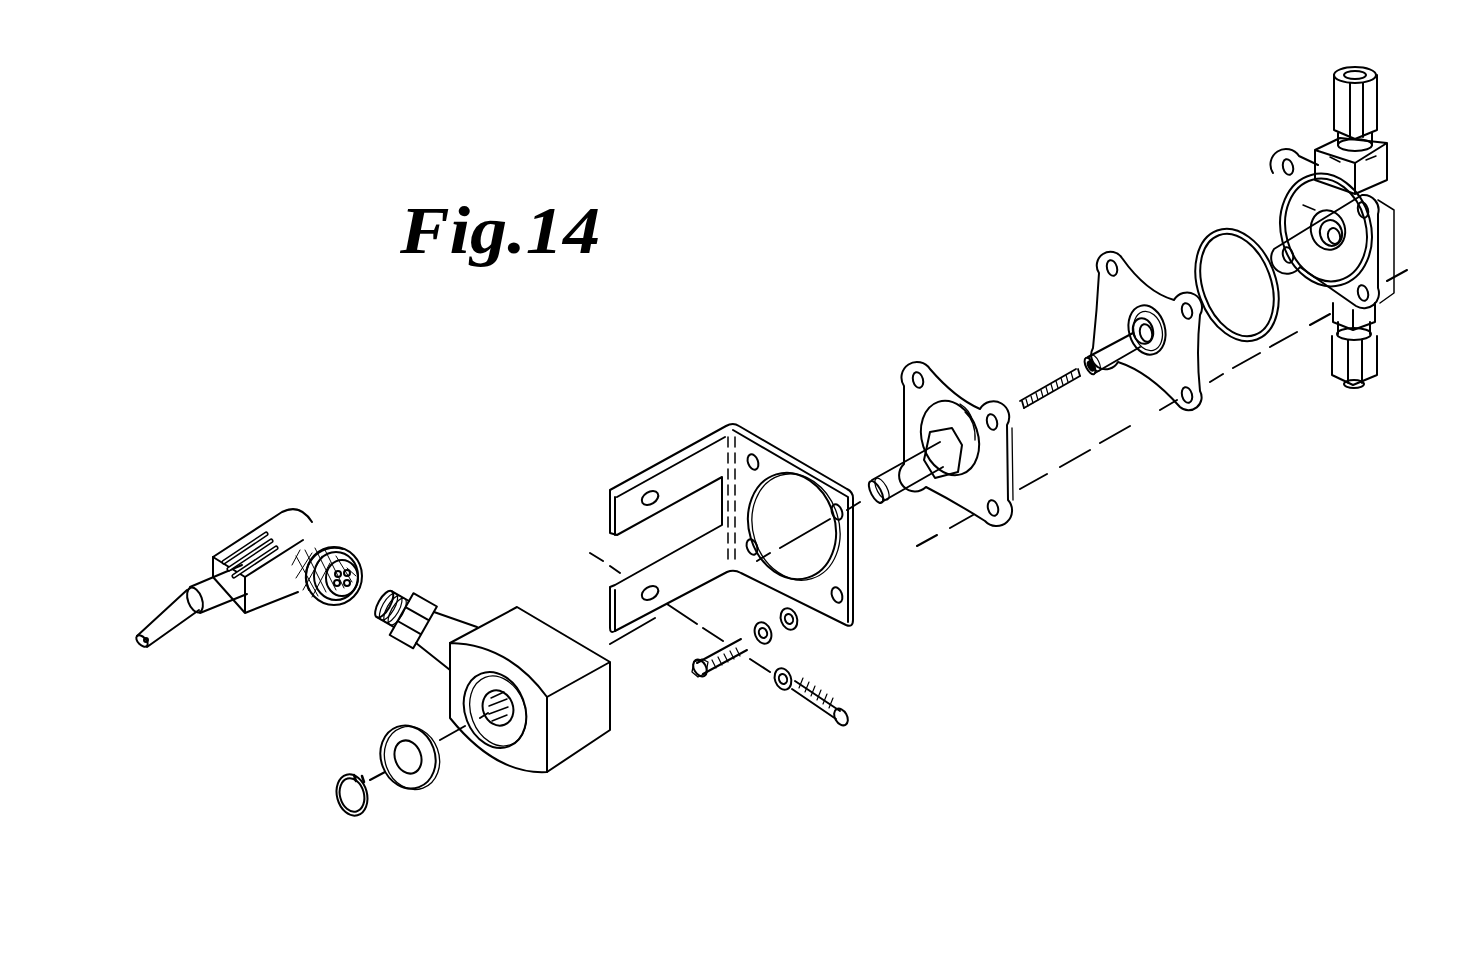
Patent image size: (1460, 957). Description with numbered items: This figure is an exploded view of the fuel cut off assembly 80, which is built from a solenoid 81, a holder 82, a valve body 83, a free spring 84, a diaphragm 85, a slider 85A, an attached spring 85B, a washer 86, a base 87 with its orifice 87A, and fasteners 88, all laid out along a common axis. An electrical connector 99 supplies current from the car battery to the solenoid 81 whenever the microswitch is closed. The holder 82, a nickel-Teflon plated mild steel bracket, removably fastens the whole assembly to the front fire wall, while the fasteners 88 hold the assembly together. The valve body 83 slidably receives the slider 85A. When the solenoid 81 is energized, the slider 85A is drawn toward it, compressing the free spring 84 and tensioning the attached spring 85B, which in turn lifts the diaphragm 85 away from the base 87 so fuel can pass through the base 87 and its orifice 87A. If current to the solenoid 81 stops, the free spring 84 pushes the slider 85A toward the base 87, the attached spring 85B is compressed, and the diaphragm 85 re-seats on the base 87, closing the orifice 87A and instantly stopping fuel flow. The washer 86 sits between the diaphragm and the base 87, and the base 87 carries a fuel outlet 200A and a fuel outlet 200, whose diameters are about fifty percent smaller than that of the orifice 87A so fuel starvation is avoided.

The fuel cut off assembly 80 is at (1056, 544).
The solenoid 81 is at (590, 735).
The holder 82 is at (703, 437).
The valve body 83 is at (908, 403).
The free spring 84 is at (1038, 393).
The diaphragm 85 is at (1133, 270).
The slider 85A is at (1100, 343).
The attached spring 85B is at (1143, 318).
The washer 86 is at (1263, 336).
The base 87 is at (1388, 241).
The orifice 87A is at (1340, 247).
The fasteners 88 is at (448, 777).
The electrical connector 99 is at (308, 524).
The fuel outlet 200 is at (1353, 372).
The fuel outlet 200A is at (1328, 92).